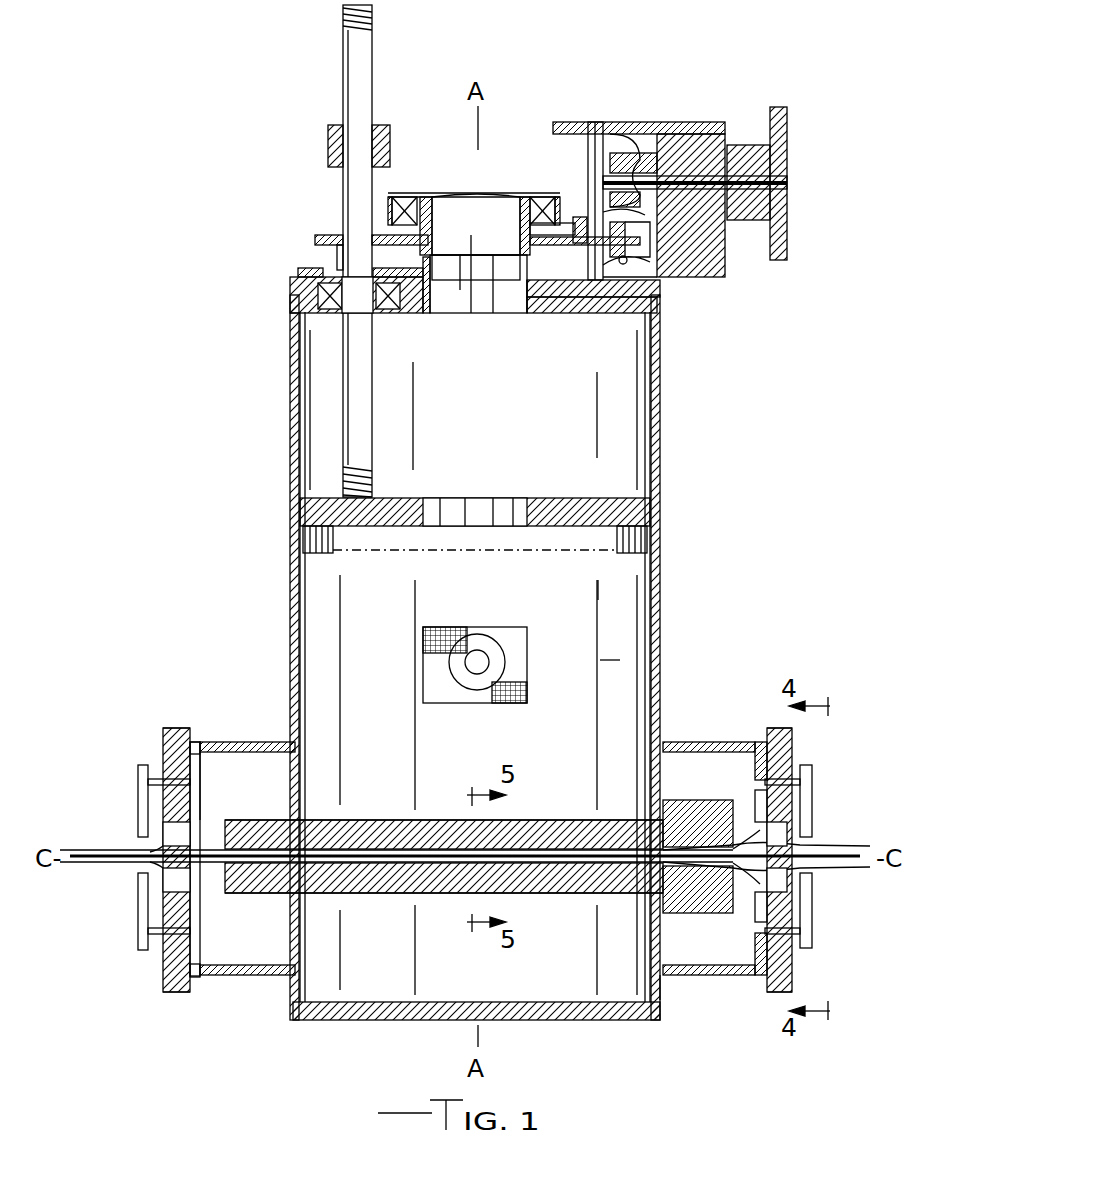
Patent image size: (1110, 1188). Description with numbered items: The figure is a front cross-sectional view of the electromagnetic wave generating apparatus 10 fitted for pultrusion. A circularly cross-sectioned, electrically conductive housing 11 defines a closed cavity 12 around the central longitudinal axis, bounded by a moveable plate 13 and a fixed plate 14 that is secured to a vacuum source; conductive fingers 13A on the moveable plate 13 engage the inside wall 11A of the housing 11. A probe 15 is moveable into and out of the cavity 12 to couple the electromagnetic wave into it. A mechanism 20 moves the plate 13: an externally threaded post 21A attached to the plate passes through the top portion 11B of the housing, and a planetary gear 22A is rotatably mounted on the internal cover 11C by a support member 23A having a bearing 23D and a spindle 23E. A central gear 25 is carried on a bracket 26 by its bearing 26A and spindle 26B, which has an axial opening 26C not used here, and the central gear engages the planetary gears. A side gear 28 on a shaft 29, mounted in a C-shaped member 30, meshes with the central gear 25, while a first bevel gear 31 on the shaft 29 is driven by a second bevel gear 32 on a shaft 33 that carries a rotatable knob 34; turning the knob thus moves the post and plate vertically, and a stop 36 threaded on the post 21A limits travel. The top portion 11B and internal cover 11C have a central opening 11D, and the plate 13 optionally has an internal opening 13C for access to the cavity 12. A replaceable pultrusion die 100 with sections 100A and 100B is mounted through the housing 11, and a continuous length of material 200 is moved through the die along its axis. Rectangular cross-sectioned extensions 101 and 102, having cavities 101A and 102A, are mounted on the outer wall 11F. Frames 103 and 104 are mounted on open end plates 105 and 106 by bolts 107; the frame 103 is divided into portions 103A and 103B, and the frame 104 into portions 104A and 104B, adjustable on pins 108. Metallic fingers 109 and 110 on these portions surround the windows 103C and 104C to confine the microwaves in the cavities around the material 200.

The electromagnetic wave generating apparatus 10 is at (250, 497).
The housing 11 is at (668, 425).
The inside wall 11A is at (655, 620).
The top portion 11B is at (650, 288).
The internal cover 11C is at (648, 304).
The central opening 11D is at (482, 300).
The outer wall 11F is at (660, 660).
The cavity 12 is at (620, 590).
The moveable plate 13 is at (655, 500).
The conductive fingers 13A is at (305, 540).
The internal opening 13C is at (478, 500).
The fixed plate 14 is at (570, 1020).
The probe 15 is at (485, 652).
The mechanism 20 is at (568, 75).
The externally threaded post 21A is at (360, 395).
The planetary gear 22A is at (320, 236).
The support member 23A is at (318, 240).
The bearing 23D is at (295, 310).
The spindle 23E is at (345, 320).
The central gear 25 is at (432, 312).
The bracket 26 is at (395, 195).
The bearing 26A is at (528, 200).
The spindle 26B is at (515, 178).
The opening 26C is at (468, 300).
The side gear 28 is at (645, 250).
The shaft 29 is at (640, 210).
The C-shaped member 30 is at (668, 134).
The first bevel gear 31 is at (570, 122).
The second bevel gear 32 is at (626, 134).
The shaft 33 is at (685, 140).
The rotatable knob 34 is at (742, 145).
The stop 36 is at (385, 135).
The pultrusion die 100 is at (375, 818).
The die section 100A is at (380, 835).
The die section 100B is at (378, 895).
The extension 101 is at (690, 742).
The cavity 101A is at (680, 995).
The extension 102 is at (240, 742).
The cavity 102A is at (280, 760).
The frame 103 is at (795, 748).
The frame portion 103A is at (790, 728).
The frame portion 103B is at (770, 995).
The window 103C is at (790, 865).
The frame 104 is at (158, 738).
The frame portion 104A is at (182, 728).
The frame portion 104B is at (170, 965).
The window 104C is at (180, 845).
The open end plate 105 is at (765, 742).
The open end plate 106 is at (200, 742).
The bolts 107 is at (138, 780).
The pins 108 is at (160, 745).
The metallic fingers 109 is at (755, 840).
The metallic fingers 110 is at (158, 846).
The material 200 is at (520, 850).